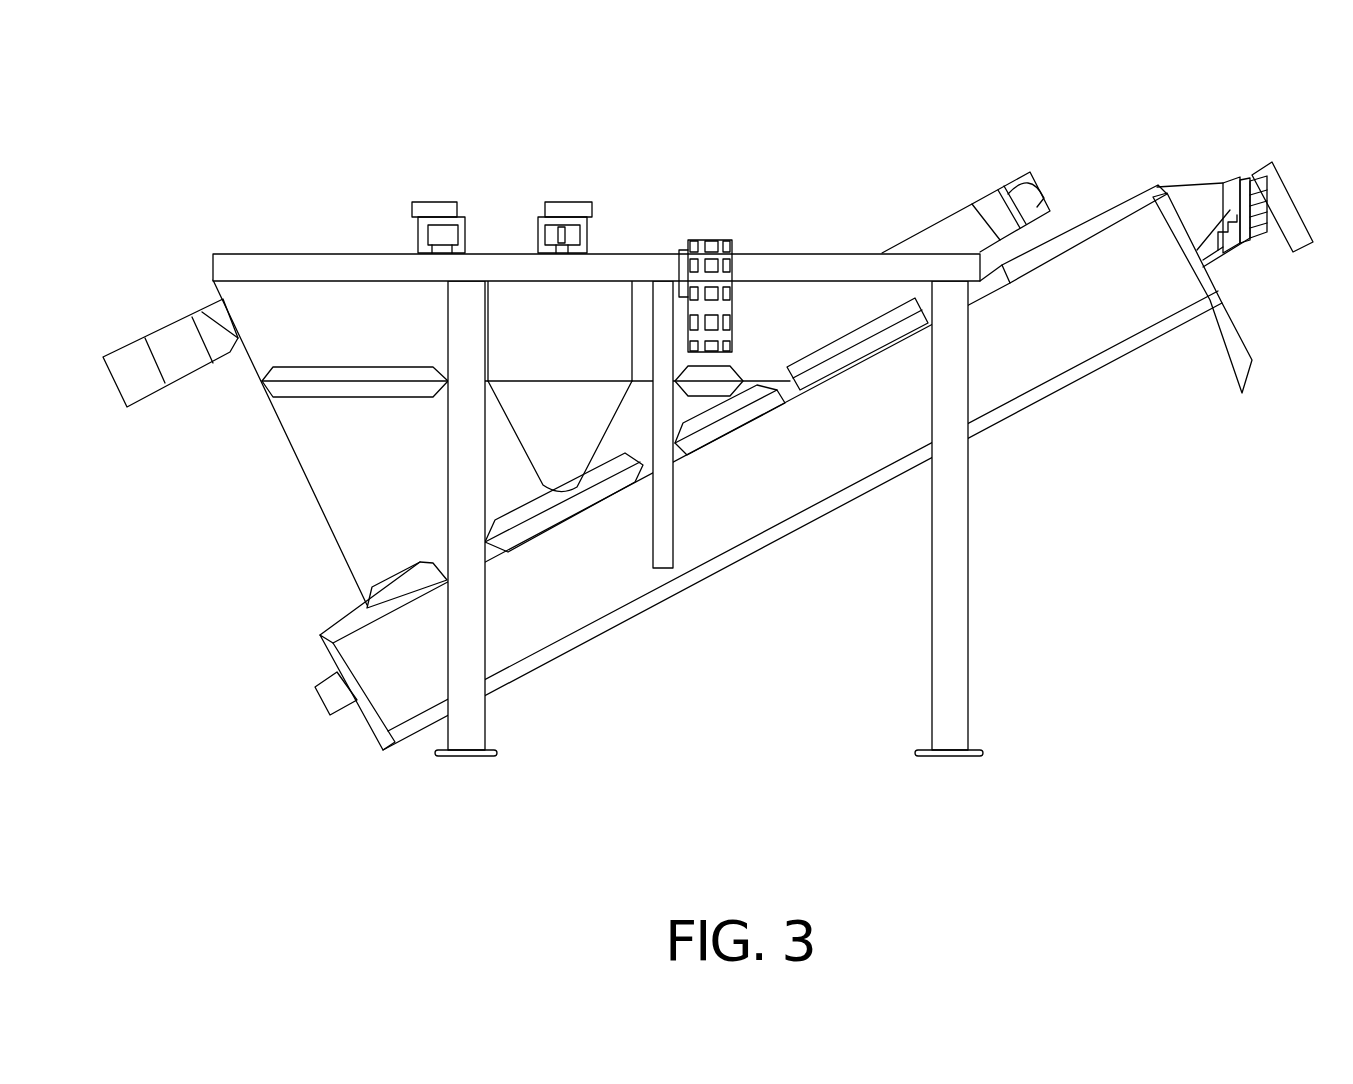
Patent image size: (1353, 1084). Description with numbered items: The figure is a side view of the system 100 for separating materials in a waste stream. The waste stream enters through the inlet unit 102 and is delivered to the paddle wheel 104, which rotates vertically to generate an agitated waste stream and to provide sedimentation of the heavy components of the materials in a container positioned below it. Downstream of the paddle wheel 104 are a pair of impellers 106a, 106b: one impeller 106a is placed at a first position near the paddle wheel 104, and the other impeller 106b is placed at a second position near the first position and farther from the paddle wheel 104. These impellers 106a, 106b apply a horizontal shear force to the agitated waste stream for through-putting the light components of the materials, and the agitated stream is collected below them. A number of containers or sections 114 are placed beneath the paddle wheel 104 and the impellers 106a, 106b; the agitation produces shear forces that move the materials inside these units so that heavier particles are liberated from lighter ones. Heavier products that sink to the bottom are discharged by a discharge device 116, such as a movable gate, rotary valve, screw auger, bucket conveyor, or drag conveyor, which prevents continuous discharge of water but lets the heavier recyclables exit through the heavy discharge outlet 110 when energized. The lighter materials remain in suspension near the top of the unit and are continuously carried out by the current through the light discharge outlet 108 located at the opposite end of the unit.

The system 100 is at (1092, 112).
The inlet unit 102 is at (985, 227).
The paddle wheel 104 is at (732, 248).
The impeller 106a is at (588, 248).
The impeller 106b is at (418, 250).
The light discharge outlet 108 is at (175, 348).
The heavy discharge outlet 110 is at (1238, 367).
The containers 114 is at (540, 415).
The discharge device 116 is at (730, 425).